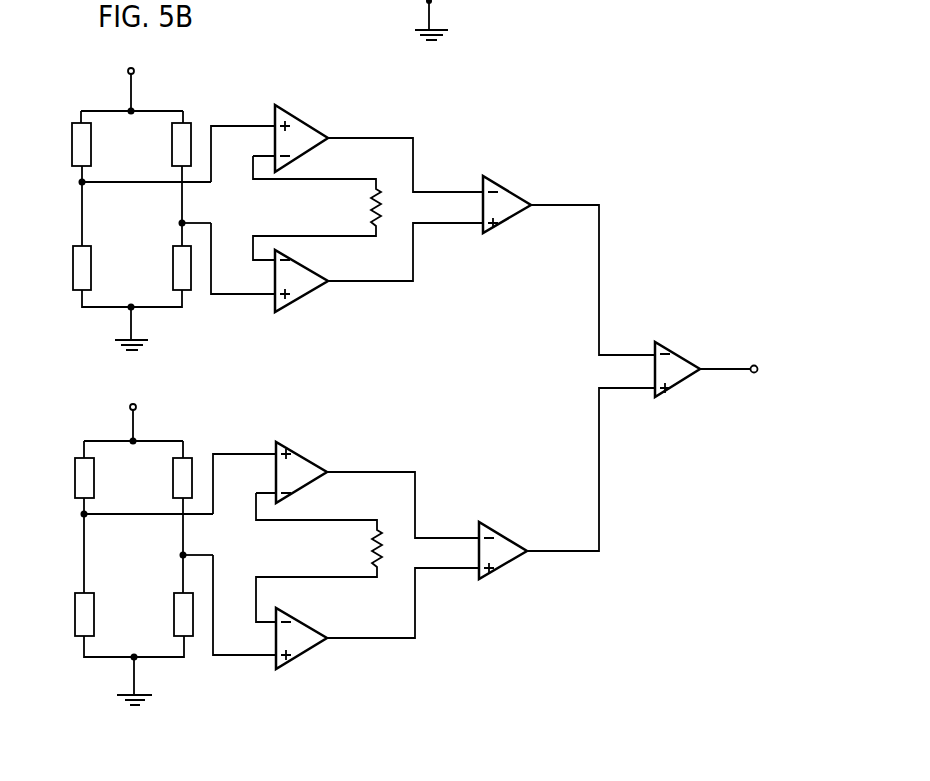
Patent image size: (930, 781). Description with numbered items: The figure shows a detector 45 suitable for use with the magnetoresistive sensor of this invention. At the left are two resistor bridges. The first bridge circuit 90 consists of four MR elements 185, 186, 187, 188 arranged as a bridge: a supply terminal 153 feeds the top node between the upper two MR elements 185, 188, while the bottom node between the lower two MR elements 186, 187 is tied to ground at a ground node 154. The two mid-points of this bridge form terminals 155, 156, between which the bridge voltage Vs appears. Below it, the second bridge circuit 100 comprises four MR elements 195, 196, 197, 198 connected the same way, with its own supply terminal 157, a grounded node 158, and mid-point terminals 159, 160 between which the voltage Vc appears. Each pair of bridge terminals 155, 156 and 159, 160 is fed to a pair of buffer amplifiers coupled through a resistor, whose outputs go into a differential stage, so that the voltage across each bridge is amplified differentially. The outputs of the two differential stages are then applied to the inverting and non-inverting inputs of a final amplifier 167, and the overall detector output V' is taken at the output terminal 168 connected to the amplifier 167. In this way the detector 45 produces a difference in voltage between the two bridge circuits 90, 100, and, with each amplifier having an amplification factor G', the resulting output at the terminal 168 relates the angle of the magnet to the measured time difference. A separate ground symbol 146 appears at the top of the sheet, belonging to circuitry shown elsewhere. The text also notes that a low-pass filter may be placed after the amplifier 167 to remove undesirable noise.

The detector 45 is at (595, 131).
The first bridge circuit 90 is at (196, 90).
The second bridge circuit 100 is at (207, 436).
The ground 146 is at (432, 3).
The input terminal 153 is at (135, 71).
The ground node 154 is at (134, 310).
The terminal 155 is at (84, 185).
The terminal 156 is at (185, 221).
The input terminal 157 is at (137, 407).
The ground node 158 is at (137, 660).
The terminal 159 is at (86, 517).
The terminal 160 is at (181, 555).
The amplifier 167 is at (676, 392).
The output terminal 168 is at (755, 373).
The MR element 185 is at (72, 137).
The MR element 186 is at (91, 270).
The MR element 187 is at (173, 253).
The MR element 188 is at (172, 135).
The MR element 195 is at (94, 478).
The MR element 196 is at (95, 617).
The MR element 197 is at (174, 620).
The MR element 198 is at (172, 484).